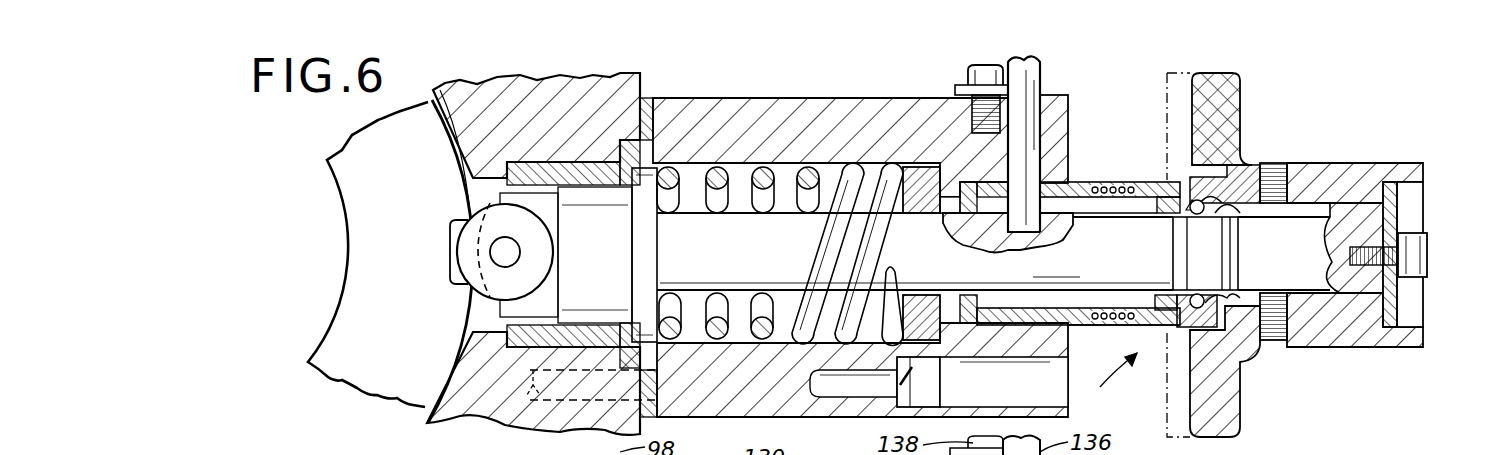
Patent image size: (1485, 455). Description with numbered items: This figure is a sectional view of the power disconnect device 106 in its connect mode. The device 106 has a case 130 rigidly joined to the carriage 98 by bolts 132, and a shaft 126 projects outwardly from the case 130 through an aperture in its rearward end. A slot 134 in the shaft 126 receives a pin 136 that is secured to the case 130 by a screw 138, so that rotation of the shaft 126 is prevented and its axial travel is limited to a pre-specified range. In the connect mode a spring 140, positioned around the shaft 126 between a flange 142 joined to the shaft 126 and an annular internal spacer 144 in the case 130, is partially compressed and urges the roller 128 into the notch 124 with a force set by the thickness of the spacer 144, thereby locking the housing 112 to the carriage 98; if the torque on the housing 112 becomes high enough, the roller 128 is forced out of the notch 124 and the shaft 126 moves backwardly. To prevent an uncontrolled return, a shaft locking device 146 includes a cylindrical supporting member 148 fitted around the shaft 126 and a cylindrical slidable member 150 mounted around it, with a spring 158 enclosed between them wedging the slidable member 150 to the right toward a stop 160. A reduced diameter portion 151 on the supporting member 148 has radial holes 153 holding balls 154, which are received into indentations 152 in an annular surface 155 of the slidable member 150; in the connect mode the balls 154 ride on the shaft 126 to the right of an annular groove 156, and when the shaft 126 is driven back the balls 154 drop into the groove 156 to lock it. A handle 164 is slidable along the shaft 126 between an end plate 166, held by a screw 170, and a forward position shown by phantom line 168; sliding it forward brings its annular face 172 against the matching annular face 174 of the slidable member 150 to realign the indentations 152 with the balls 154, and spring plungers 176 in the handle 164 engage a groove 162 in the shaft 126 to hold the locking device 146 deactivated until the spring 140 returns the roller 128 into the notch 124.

The carriage 98 is at (567, 97).
The disconnect device 106 is at (1053, 83).
The housing 112 is at (360, 175).
The notch 124 is at (453, 228).
The shaft 126 is at (913, 251).
The roller 128 is at (470, 273).
The case 130 is at (817, 127).
The bolts 132 is at (530, 372).
The slot 134 is at (1060, 210).
The pin 136 is at (1023, 113).
The screw 138 is at (967, 78).
The spring 140 is at (707, 310).
The flange 142 is at (640, 207).
The annular internal spacer 144 is at (925, 312).
The shaft locking device 146 is at (1124, 371).
The cylindrical supporting member 148 is at (1160, 277).
The cylindrical slidable member 150 is at (1187, 203).
The reduced diameter portion 151 is at (1217, 73).
The indentations 152 is at (1195, 203).
The radial holes 153 is at (1283, 343).
The balls 154 is at (1225, 205).
The annular surface 155 is at (1200, 205).
The annular groove 156 is at (1170, 233).
The spring 158 is at (1103, 325).
The stop 160 is at (1232, 213).
The groove 162 is at (1227, 250).
The handle 164 is at (1390, 167).
The end plate 166 is at (1423, 200).
The phantom line 168 is at (1167, 107).
The screw 170 is at (1417, 260).
The annular face 172 is at (1223, 337).
The annular face 174 is at (1131, 372).
The spring plungers 176 is at (1270, 288).